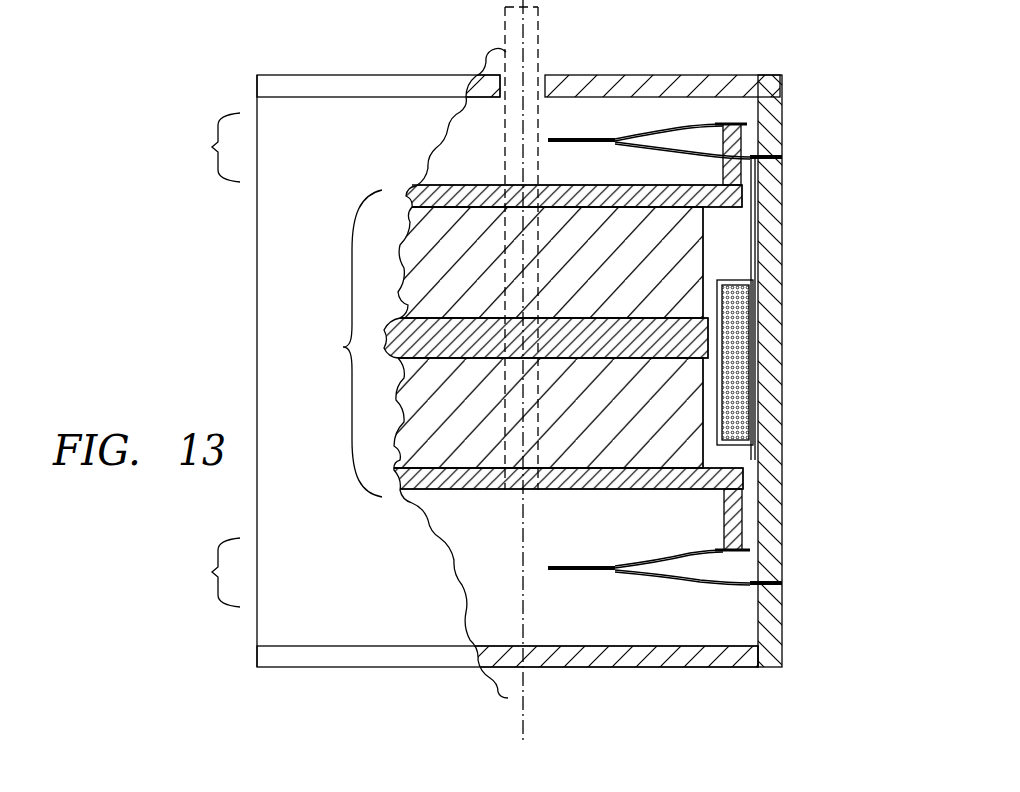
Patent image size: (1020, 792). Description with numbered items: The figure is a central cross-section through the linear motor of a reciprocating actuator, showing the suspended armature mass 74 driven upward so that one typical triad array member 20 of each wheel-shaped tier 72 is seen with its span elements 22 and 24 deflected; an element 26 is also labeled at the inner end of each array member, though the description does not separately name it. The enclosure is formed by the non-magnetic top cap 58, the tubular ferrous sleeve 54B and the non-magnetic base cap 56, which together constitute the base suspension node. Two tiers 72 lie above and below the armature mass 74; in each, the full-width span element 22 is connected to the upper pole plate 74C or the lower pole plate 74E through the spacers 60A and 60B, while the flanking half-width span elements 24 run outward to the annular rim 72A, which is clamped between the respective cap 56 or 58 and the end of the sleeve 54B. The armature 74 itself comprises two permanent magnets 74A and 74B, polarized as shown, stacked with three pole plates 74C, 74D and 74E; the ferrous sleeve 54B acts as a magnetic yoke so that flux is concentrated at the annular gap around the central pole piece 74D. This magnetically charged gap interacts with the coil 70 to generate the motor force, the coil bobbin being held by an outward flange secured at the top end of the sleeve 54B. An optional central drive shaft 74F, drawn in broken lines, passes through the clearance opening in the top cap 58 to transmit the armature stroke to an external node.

The triad array member 20 is at (642, 150).
The full-width span element 22 is at (672, 125).
The half-width span element 24 is at (628, 145).
The flexure mounting bar 26 is at (548, 138).
The tubular ferrous sleeve 54B is at (773, 420).
The non-magnetic base cap 56 is at (745, 653).
The non-magnetic top cap 58 is at (630, 80).
The spacer 60A is at (735, 135).
The spacer 60B is at (730, 512).
The coil 70 is at (750, 300).
The wheel-shaped tier 72 is at (209, 360).
The annular rim 72A is at (775, 157).
The armature mass 74 is at (343, 347).
The permanent magnet 74A is at (683, 258).
The permanent magnet 74B is at (683, 428).
The upper pole plate 74C is at (418, 185).
The central pole piece 74D is at (700, 332).
The lower pole plate 74E is at (742, 487).
The central drive shaft 74F is at (517, 63).